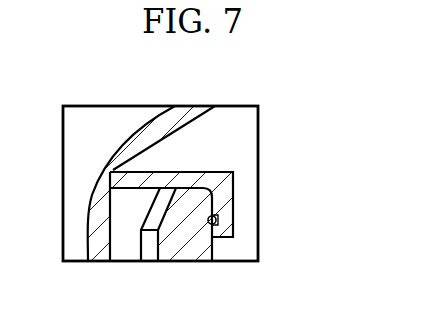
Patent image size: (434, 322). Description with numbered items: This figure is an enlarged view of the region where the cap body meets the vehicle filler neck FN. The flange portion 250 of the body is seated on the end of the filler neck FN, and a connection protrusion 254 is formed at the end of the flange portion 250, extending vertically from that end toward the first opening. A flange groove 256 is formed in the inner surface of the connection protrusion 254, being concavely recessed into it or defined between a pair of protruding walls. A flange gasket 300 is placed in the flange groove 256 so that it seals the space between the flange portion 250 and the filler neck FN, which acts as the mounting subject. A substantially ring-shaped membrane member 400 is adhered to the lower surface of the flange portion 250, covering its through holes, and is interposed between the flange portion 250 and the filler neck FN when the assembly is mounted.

The membrane member 400 is at (162, 187).
The flange portion 250 is at (233, 163).
The connection protrusion 254 is at (223, 182).
The flange groove 256 is at (217, 209).
The flange gasket 300 is at (219, 223).
The filler neck FN is at (204, 251).